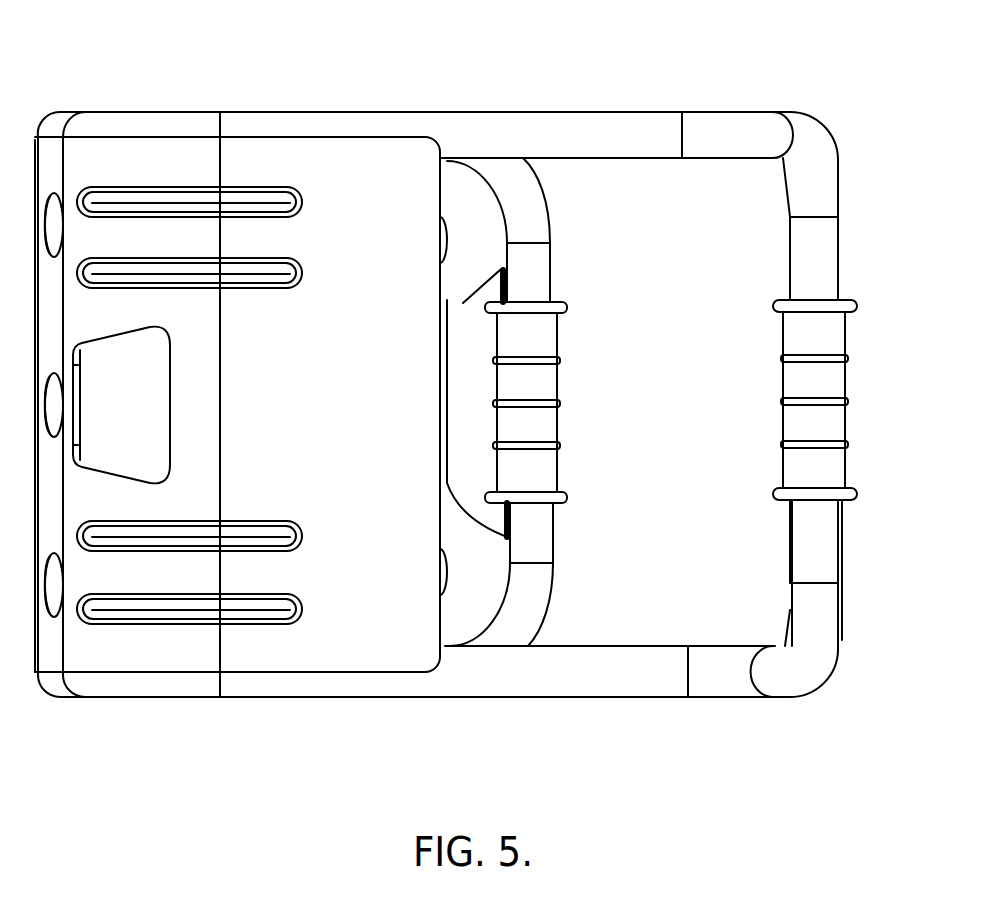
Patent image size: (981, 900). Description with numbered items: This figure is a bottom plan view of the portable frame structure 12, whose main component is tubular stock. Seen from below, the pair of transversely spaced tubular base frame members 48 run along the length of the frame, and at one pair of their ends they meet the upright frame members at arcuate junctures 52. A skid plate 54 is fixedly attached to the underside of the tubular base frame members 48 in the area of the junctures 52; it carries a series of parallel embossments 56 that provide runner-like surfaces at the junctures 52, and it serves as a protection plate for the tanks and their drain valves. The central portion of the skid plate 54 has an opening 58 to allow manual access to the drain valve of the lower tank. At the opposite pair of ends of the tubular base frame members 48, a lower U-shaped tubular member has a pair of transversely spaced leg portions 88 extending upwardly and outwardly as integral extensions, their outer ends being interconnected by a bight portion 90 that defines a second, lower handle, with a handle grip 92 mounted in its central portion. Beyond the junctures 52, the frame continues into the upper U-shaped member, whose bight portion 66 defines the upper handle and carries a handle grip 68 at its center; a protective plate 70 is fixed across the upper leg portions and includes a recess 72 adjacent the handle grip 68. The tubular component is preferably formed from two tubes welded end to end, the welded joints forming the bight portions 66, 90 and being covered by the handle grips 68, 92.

The frame structure 12 is at (468, 398).
The tubular base frame members 48 is at (437, 112).
The junctures 52 is at (128, 128).
The skid plate 54 is at (528, 402).
The parallel embossments 56 is at (293, 212).
The opening 58 is at (166, 405).
The bight portion 66 is at (540, 273).
The handle grip 68 is at (540, 465).
The protective plate 70 is at (472, 537).
The recess 72 is at (467, 305).
The leg portions 88 is at (745, 118).
The bight portion 90 is at (830, 538).
The handle grip 92 is at (830, 383).